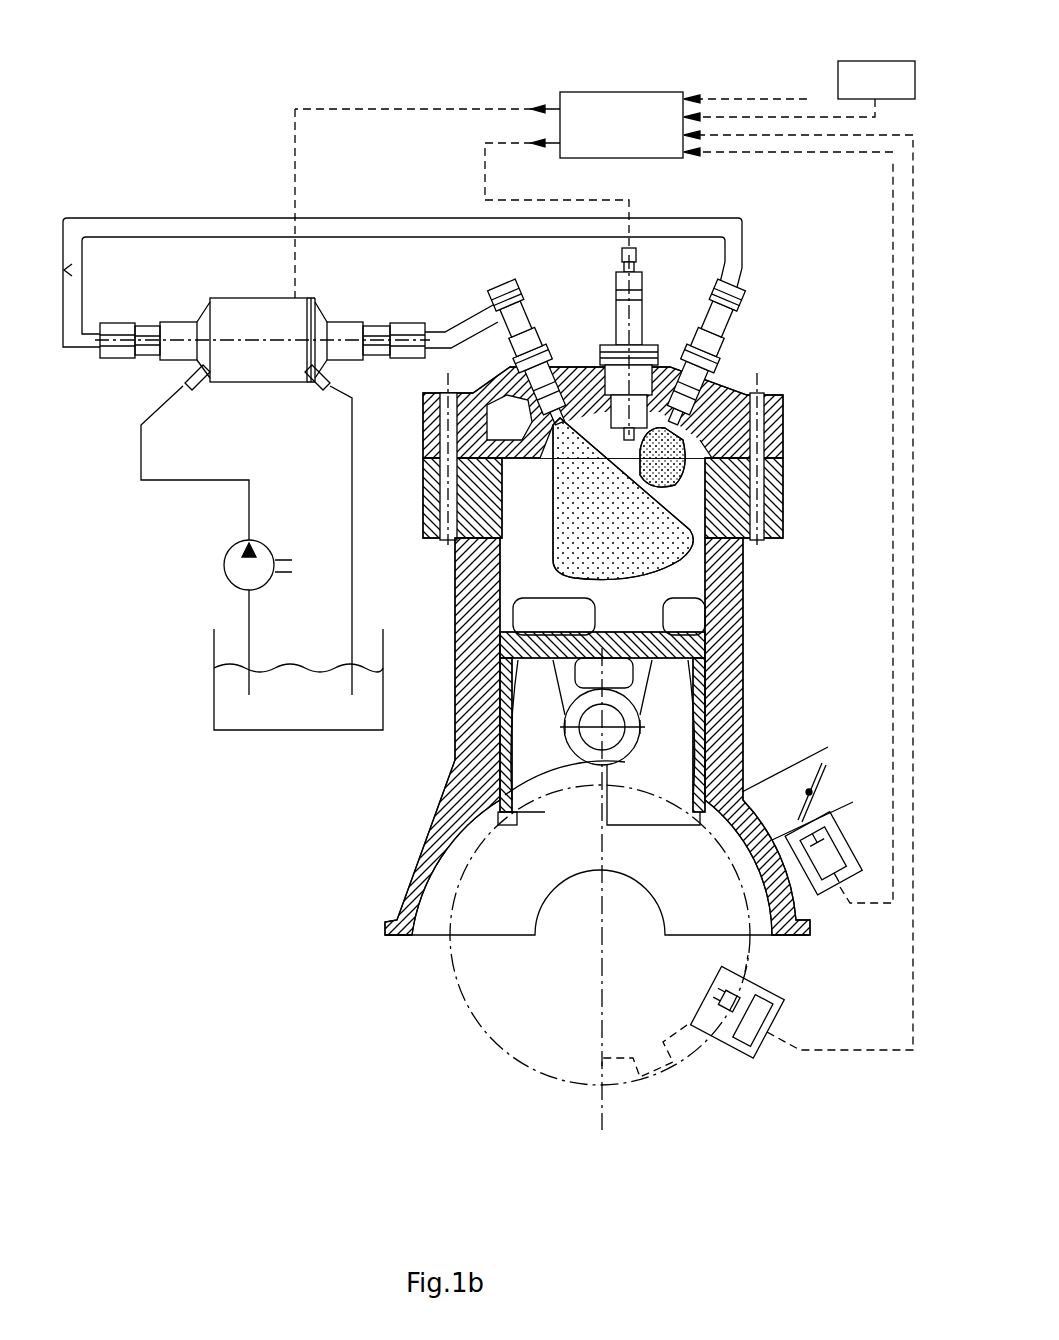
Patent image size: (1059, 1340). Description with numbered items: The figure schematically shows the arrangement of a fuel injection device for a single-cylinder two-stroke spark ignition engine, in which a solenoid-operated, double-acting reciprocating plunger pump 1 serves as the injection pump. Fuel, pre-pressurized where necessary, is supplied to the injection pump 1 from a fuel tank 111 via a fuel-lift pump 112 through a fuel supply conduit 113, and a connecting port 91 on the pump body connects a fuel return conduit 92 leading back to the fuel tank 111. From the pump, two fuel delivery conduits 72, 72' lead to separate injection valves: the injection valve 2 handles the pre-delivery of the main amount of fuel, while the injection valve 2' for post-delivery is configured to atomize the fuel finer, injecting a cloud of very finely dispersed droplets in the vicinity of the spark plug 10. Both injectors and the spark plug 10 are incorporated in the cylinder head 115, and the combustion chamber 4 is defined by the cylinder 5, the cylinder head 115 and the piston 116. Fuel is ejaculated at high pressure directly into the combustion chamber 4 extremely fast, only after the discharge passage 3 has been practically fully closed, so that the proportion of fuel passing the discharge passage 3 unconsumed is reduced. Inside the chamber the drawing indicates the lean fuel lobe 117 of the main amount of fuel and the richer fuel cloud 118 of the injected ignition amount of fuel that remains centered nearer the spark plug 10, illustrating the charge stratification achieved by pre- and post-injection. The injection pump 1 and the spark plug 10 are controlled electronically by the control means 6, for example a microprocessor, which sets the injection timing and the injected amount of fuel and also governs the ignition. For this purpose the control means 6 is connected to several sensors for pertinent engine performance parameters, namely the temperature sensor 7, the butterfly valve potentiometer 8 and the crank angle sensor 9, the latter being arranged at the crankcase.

The reciprocating plunger pump 1 is at (247, 398).
The injection valve 2 is at (531, 346).
The injection valve for post-delivery 2' is at (732, 354).
The discharge passage 3 is at (467, 622).
The combustion chamber 4 is at (683, 562).
The cylinder 5 is at (728, 623).
The control means 6 is at (626, 118).
The temperature sensor 7 is at (862, 61).
The butterfly valve potentiometer 8 is at (823, 892).
The crank angle sensor 9 is at (743, 1060).
The spark plug 10 is at (637, 312).
The fuel delivery conduit 72 is at (461, 314).
The fuel delivery conduit 72' is at (402, 255).
The connecting port 91 is at (337, 384).
The fuel return conduit 92 is at (352, 536).
The fuel tank 111 is at (265, 713).
The fuel-lift pump 112 is at (225, 563).
The fuel supply conduit 113 is at (141, 448).
The cylinder head 115 is at (735, 408).
The piston 116 is at (707, 660).
The lean fuel lobe 117 is at (618, 507).
The richer fuel cloud 118 is at (670, 450).